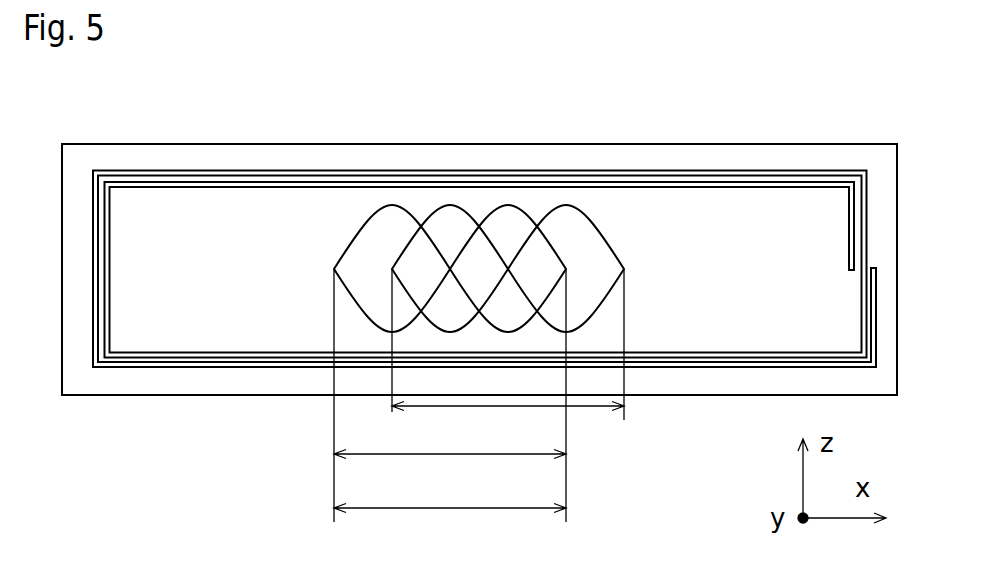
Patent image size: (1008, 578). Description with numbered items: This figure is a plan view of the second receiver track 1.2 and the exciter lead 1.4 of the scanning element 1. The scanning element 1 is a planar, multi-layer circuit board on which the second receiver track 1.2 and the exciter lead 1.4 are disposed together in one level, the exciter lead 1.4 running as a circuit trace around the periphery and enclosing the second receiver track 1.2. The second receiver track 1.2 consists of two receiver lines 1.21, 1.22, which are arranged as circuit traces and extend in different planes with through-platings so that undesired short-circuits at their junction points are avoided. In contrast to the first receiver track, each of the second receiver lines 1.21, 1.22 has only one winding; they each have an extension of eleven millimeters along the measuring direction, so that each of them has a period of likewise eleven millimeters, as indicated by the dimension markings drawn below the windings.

The scanning element 1 is at (737, 162).
The second receiver track 1.2 is at (441, 314).
The second receiver line 1.21 is at (510, 207).
The second receiver line 1.22 is at (570, 207).
The exciter lead 1.4 is at (183, 168).